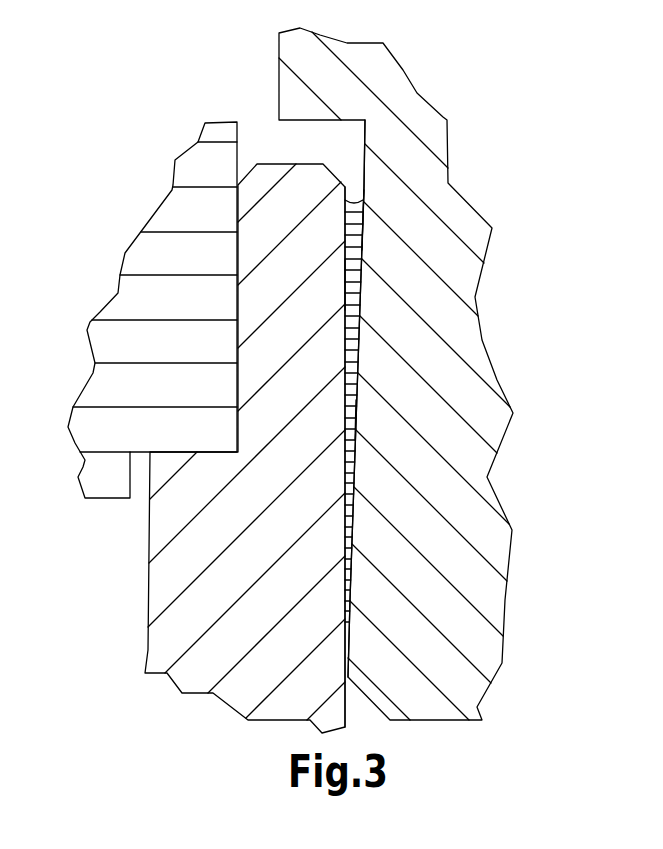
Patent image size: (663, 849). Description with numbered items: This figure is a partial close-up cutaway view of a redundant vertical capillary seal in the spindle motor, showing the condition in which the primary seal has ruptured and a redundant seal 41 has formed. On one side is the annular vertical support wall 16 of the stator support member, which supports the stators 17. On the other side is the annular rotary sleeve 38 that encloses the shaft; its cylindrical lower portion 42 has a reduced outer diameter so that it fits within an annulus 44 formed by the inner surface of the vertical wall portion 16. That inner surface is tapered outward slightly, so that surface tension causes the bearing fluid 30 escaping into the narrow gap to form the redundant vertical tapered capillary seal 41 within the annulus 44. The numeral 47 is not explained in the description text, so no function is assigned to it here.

The annular vertical support wall 16 is at (177, 588).
The stators 17 is at (123, 343).
The fluid 30 is at (358, 305).
The annular rotary sleeve 38 is at (467, 222).
The redundant vertical tapered capillary seal 41 is at (361, 239).
The cylindrical lower portion of the sleeve 42 is at (465, 560).
The annulus 44 is at (353, 415).
The body face 47 is at (343, 293).